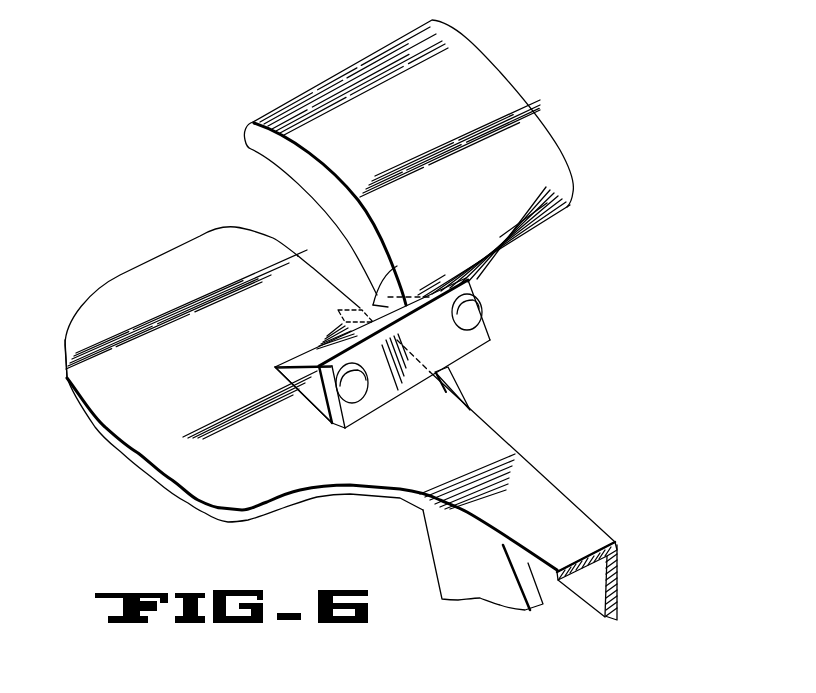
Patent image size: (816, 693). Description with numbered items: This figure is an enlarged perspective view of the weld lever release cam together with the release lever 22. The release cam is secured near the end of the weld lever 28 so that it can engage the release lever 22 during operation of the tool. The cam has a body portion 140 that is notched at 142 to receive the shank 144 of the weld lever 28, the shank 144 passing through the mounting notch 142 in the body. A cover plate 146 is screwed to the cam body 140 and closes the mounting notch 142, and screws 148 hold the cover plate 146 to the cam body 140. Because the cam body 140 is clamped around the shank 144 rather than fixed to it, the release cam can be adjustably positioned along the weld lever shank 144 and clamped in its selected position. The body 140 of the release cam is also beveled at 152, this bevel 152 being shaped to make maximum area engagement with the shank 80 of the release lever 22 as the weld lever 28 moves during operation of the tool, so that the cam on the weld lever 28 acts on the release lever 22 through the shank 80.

The release lever 22 is at (217, 242).
The weld lever 28 is at (537, 121).
The shank of the release lever 80 is at (507, 445).
The body portion 140 is at (323, 342).
The notch 142 is at (397, 268).
The shank of the weld lever 144 is at (436, 287).
The cover plate 146 is at (482, 337).
The screws 148 is at (481, 302).
The bevel 152 is at (285, 380).